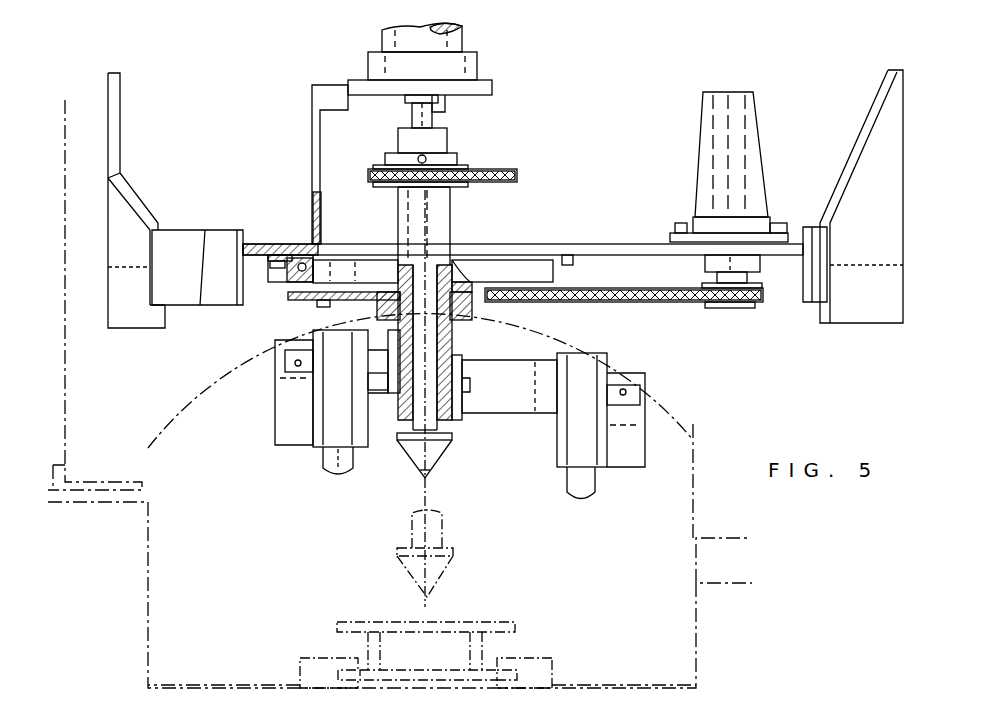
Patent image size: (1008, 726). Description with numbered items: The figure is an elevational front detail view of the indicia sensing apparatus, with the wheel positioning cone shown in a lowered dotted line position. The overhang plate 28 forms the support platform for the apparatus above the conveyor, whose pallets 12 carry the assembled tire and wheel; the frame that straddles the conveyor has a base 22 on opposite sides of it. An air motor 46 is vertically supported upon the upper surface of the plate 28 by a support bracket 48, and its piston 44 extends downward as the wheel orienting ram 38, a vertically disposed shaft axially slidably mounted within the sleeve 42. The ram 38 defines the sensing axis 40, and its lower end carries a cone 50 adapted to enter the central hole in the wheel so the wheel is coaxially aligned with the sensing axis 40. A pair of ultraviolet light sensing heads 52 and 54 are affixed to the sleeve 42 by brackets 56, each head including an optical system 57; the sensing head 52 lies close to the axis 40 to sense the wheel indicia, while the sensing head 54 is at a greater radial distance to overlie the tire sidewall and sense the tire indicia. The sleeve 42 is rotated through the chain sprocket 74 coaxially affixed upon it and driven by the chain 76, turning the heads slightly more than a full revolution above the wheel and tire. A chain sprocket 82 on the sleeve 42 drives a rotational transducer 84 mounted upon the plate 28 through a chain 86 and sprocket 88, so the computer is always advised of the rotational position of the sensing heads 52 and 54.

The pallet 12 is at (505, 624).
The base 22 is at (400, 394).
The overhang plate 28 is at (590, 244).
The wheel orienting ram 38 is at (435, 420).
The sensing axis 40 is at (430, 510).
The sleeve 42 is at (455, 335).
The piston 44 is at (445, 122).
The air motor 46 is at (465, 45).
The support bracket 48 is at (312, 132).
The cone 50 is at (412, 470).
The ultraviolet light sensing head 52 is at (331, 388).
The ultraviolet light sensing head 54 is at (601, 410).
The bracket 56 is at (383, 462).
The optical system 57 is at (338, 478).
The chain sprocket 74 is at (462, 187).
The chain 76 is at (508, 170).
The chain sprocket 82 is at (300, 322).
The rotational transducer 84 is at (729, 167).
The chain 86 is at (638, 302).
The sprocket 88 is at (766, 308).